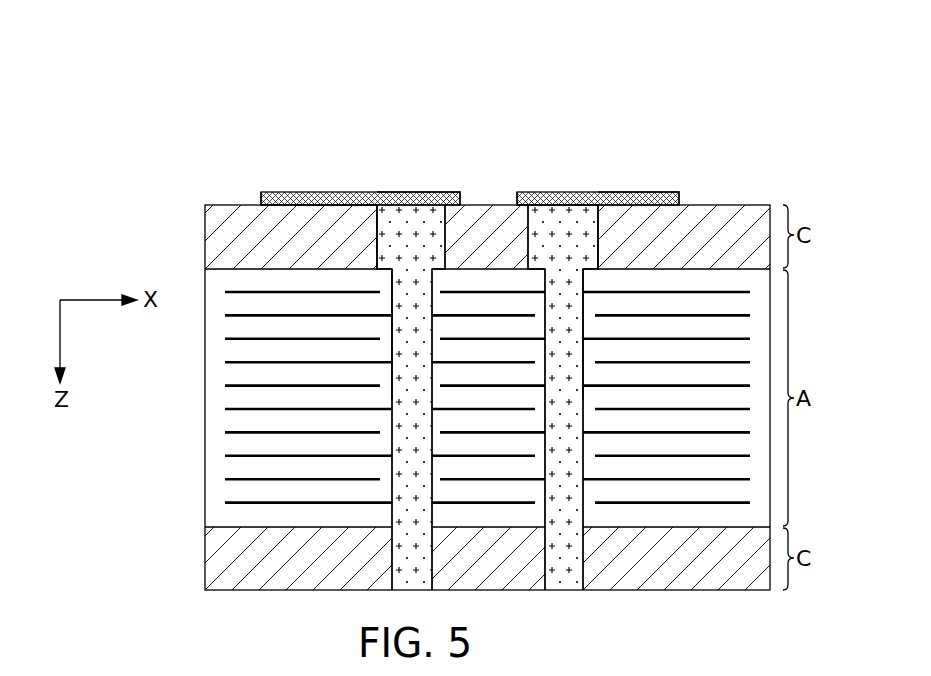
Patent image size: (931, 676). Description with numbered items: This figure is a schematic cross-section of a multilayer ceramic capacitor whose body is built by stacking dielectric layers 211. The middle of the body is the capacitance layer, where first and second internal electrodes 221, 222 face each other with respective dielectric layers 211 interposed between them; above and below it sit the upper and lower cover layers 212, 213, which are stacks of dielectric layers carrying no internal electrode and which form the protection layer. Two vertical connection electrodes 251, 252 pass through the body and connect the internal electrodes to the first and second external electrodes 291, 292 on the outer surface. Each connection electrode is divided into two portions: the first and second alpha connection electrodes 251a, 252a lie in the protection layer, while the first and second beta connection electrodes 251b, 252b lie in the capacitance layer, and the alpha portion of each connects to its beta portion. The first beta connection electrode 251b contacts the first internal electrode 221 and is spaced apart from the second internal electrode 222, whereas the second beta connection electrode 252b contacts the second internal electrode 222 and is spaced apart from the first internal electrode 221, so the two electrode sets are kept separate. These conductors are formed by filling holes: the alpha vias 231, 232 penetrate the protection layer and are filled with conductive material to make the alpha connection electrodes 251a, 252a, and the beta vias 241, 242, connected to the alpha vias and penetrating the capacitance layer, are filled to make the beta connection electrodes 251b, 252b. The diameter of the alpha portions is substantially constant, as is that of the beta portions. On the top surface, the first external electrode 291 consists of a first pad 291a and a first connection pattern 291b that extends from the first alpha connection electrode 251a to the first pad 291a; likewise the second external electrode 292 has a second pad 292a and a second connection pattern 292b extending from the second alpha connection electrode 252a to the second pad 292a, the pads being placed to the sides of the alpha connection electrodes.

The dielectric layer 211 is at (243, 448).
The upper cover layer 212 is at (212, 248).
The lower cover layer 213 is at (217, 563).
The first internal electrode 221 is at (235, 510).
The second internal electrode 222 is at (235, 486).
The alpha via 231 is at (390, 285).
The alpha via 232 is at (583, 285).
The beta via 241 is at (377, 230).
The beta via 242 is at (600, 231).
The connection electrode 251 is at (467, 36).
The first alpha connection electrode 251a is at (418, 226).
The first beta connection electrode 251b is at (420, 338).
The connection electrode 252 is at (615, 36).
The second alpha connection electrode 252a is at (553, 235).
The second beta connection electrode 252b is at (562, 312).
The first external electrode 291 is at (402, 124).
The first pad 291a is at (310, 192).
The first connection pattern 291b is at (385, 192).
The second external electrode 292 is at (687, 124).
The second pad 292a is at (648, 192).
The second connection pattern 292b is at (583, 192).